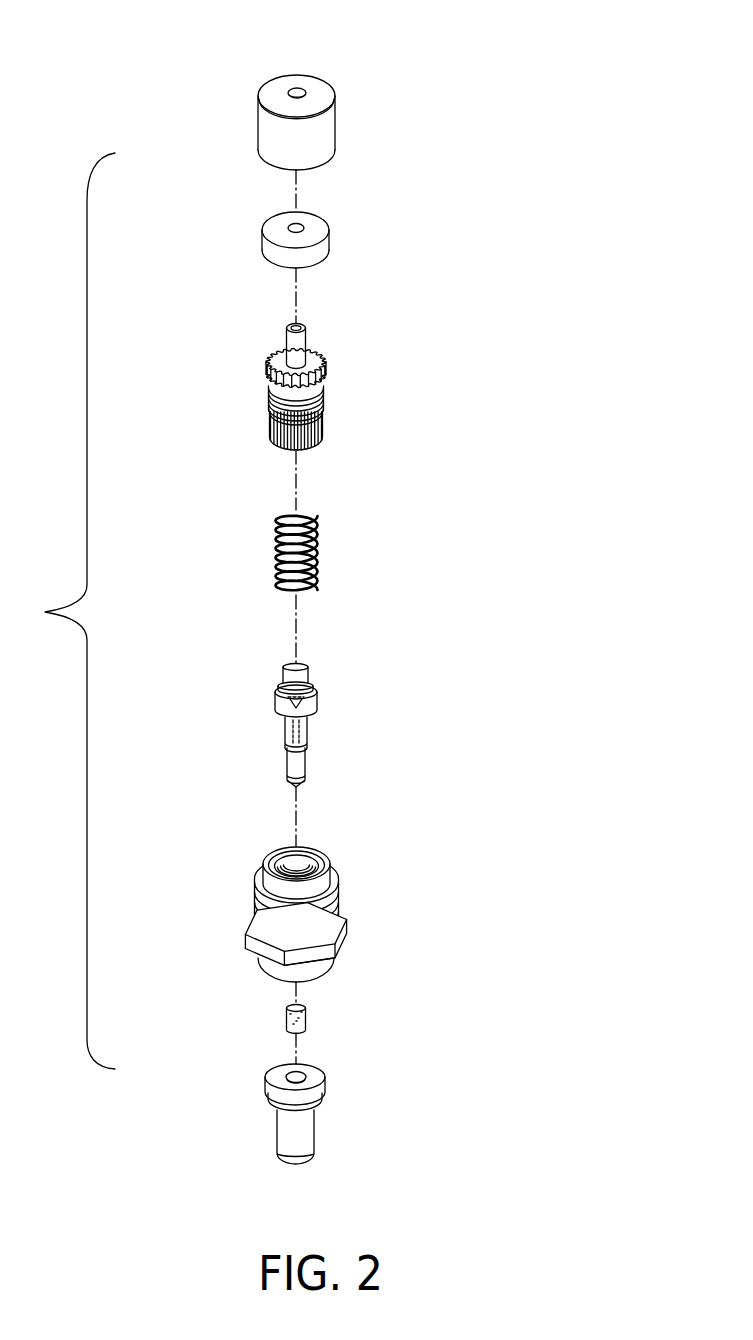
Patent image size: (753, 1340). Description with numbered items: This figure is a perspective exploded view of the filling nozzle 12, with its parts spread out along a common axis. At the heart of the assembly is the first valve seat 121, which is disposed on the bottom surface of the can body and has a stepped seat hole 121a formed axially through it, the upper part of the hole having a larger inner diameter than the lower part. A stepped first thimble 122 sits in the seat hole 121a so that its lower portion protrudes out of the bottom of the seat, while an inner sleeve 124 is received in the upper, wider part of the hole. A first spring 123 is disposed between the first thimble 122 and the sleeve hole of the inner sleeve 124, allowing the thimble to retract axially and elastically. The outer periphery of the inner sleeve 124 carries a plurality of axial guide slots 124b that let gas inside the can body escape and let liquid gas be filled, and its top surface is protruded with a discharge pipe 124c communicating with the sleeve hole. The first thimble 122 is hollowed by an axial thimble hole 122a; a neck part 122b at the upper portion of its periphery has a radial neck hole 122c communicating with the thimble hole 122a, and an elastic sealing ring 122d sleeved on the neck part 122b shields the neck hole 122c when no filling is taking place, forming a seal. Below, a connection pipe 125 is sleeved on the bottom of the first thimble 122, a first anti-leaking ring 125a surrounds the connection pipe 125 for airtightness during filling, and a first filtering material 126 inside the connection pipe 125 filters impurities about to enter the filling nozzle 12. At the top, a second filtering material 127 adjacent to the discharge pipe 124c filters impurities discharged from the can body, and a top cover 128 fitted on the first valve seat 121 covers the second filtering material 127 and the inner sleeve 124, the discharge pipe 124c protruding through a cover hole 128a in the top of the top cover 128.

The filling nozzle 12 is at (64, 611).
The first valve seat 121 is at (367, 888).
The stepped seat hole 121a is at (305, 862).
The first thimble 122 is at (301, 715).
The thimble hole 122a is at (287, 760).
The neck part 122b is at (313, 713).
The neck hole 122c is at (284, 690).
The elastic sealing ring 122d is at (293, 702).
The first spring 123 is at (316, 549).
The inner sleeve 124 is at (365, 388).
The guide slots 124b is at (322, 418).
The discharge pipe 124c is at (300, 340).
The connection pipe 125 is at (295, 1118).
The first anti-leaking ring 125a is at (270, 1102).
The first filtering material 126 is at (306, 1014).
The second filtering material 127 is at (325, 243).
The top cover 128 is at (351, 85).
The cover hole 128a is at (299, 90).